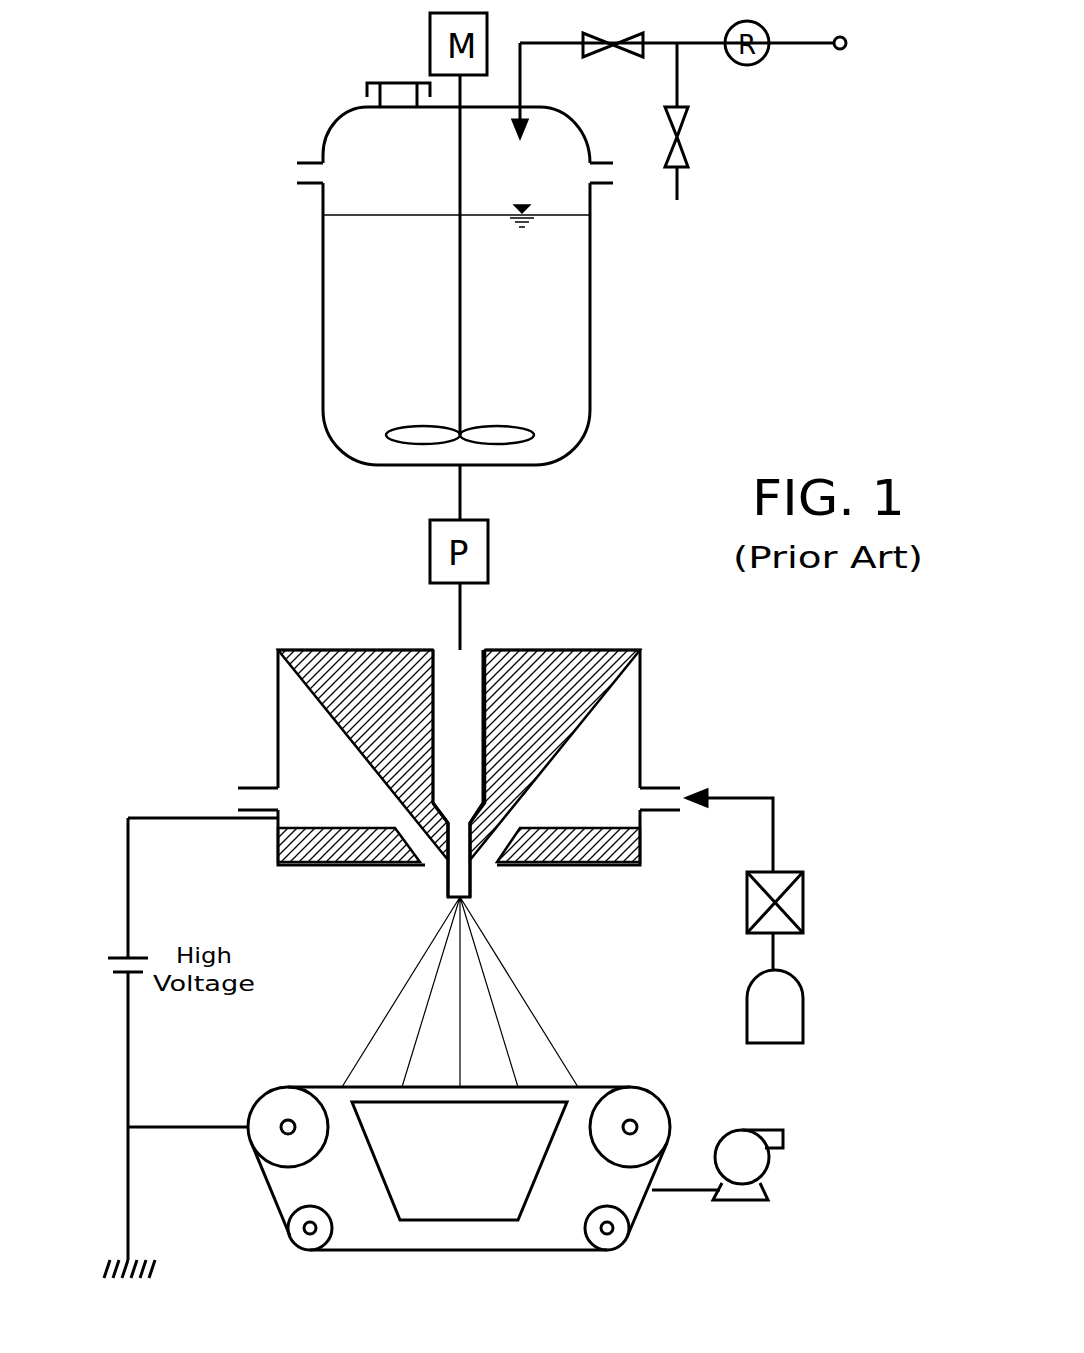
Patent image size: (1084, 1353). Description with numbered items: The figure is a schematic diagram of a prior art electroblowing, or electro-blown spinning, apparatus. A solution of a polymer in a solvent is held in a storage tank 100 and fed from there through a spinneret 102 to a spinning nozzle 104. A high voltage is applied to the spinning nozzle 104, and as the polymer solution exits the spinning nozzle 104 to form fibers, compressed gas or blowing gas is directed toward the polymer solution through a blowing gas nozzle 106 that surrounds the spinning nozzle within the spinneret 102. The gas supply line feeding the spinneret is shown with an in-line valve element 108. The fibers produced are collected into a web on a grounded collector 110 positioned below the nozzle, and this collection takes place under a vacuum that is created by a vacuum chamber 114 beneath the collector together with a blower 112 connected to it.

The storage tank 100 is at (323, 300).
The spinneret 102 is at (565, 648).
The spinning nozzle 104 is at (457, 865).
The blowing gas nozzle 106 is at (478, 865).
The gas valve 108 is at (805, 893).
The grounded collector 110 is at (597, 1087).
The blower 112 is at (768, 1168).
The vacuum chamber 114 is at (492, 1222).